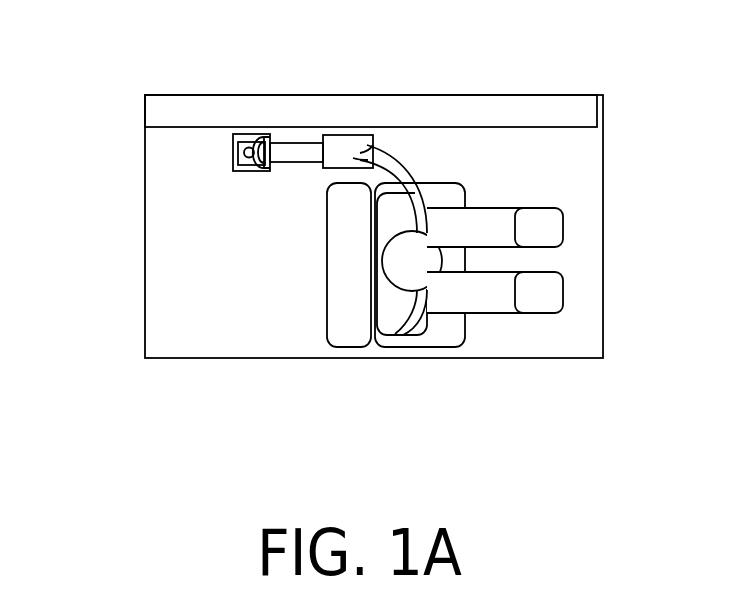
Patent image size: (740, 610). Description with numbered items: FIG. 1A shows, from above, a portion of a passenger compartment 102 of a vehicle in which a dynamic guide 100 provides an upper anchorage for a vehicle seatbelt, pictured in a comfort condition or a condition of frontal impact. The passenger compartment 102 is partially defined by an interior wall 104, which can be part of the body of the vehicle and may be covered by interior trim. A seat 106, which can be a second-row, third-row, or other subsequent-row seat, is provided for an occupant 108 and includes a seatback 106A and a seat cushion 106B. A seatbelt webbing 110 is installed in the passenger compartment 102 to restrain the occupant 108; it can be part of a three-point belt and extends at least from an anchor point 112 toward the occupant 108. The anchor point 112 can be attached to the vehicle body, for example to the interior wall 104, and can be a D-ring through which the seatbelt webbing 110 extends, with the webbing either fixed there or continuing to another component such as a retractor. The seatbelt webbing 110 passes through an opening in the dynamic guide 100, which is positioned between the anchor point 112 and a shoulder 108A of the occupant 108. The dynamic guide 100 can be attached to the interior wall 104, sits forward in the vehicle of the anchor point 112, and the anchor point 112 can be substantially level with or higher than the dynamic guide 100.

The dynamic guide 100 is at (348, 135).
The passenger compartment 102 is at (562, 166).
The interior wall 104 is at (180, 127).
The seat 106 is at (381, 321).
The seatback 106A is at (321, 321).
The seat cushion 106B is at (422, 345).
The occupant 108 is at (537, 313).
The shoulder 108A is at (388, 193).
The seatbelt webbing 110 is at (295, 162).
The anchor point 112 is at (253, 134).